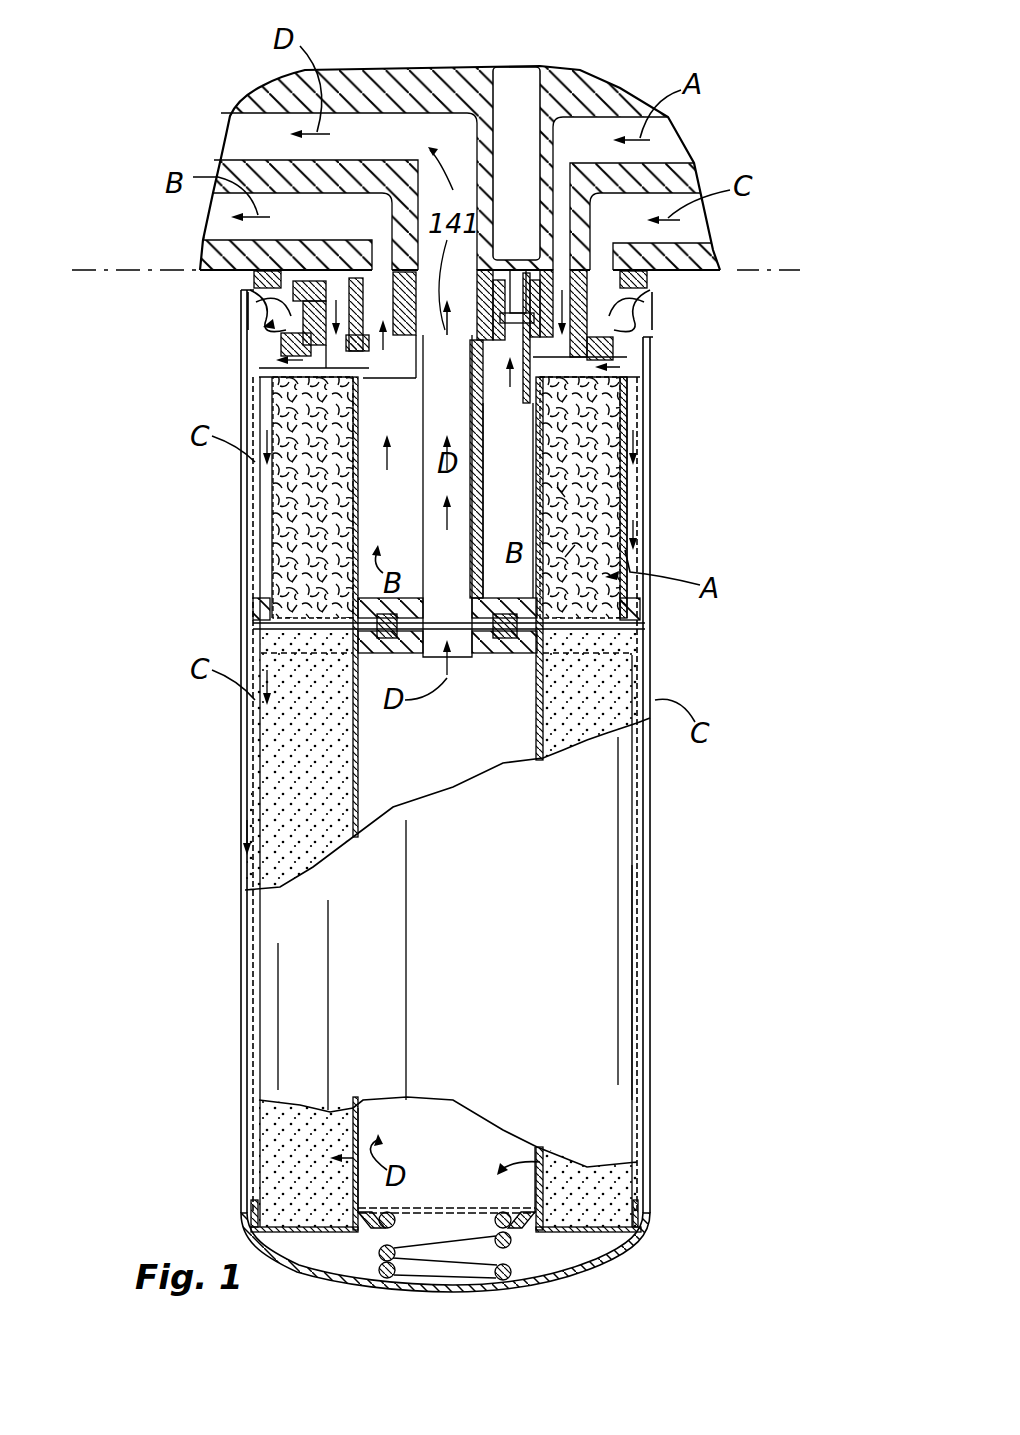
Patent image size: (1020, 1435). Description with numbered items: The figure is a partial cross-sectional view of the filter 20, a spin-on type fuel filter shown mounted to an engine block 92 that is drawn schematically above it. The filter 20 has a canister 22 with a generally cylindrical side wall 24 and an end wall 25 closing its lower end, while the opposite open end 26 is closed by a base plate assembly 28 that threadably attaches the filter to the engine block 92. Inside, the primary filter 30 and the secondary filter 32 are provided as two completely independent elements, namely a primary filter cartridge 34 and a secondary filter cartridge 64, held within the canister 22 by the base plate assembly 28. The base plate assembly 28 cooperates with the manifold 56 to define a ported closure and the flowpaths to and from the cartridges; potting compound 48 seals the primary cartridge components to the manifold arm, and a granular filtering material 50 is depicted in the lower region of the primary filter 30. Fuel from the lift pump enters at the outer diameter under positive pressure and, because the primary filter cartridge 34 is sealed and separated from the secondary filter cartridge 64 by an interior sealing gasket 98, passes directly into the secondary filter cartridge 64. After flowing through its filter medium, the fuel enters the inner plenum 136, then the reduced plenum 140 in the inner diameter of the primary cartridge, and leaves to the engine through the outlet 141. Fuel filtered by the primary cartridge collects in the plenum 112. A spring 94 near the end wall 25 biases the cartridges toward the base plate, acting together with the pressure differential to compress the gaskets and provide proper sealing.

The engine block 92 is at (438, 86).
The manifold 56 is at (462, 314).
The outlet 141 is at (447, 242).
The open end 26 is at (243, 287).
The base plate assembly 28 is at (648, 318).
The reduced plenum 140 is at (472, 398).
The plenum 112 is at (537, 467).
The primary filter cartridge 34 is at (638, 455).
The primary filter 30 is at (613, 535).
The potting compound 48 is at (402, 598).
The canister 22 is at (668, 620).
The interior sealing gasket 98 is at (509, 645).
The filter material 50 is at (374, 754).
The secondary filter 32 is at (511, 713).
The filter 20 is at (660, 960).
The side wall 24 is at (615, 1043).
The inner plenum 136 is at (494, 1172).
The secondary filter cartridge 64 is at (637, 1190).
The end wall 25 is at (590, 1274).
The spring 94 is at (396, 1272).